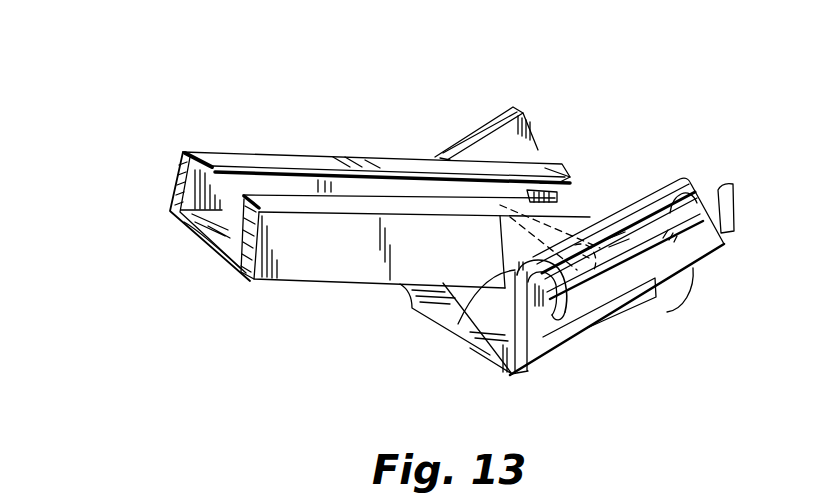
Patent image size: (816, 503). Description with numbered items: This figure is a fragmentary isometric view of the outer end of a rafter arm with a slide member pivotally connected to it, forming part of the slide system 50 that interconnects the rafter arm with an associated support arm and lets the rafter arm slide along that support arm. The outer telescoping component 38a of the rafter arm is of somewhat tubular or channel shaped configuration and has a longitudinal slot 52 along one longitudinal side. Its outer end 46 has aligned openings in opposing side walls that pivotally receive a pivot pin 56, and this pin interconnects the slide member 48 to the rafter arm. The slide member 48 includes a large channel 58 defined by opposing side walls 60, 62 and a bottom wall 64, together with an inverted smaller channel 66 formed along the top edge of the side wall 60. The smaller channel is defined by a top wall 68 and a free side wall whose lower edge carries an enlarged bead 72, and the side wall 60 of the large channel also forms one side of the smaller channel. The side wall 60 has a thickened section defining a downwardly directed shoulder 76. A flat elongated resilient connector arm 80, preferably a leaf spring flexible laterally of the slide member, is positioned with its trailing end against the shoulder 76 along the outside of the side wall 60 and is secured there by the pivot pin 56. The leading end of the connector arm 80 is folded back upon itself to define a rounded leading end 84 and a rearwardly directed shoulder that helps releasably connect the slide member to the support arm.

The outer telescoping component 38a is at (183, 152).
The outer end 46 is at (525, 163).
The slide member 48 is at (466, 133).
The slide system 50 is at (331, 112).
The longitudinal slot 52 is at (272, 172).
The pivot pin 56 is at (545, 174).
The large channel 58 is at (465, 290).
The side wall 60 is at (590, 318).
The side wall 62 is at (472, 157).
The bottom wall 64 is at (457, 303).
The inverted smaller channel 66 is at (523, 365).
The top wall 68 is at (697, 198).
The enlarged bead 72 is at (557, 318).
The downwardly directed shoulder 76 is at (513, 270).
The connector arm 80 is at (685, 258).
The rounded leading end 84 is at (732, 184).